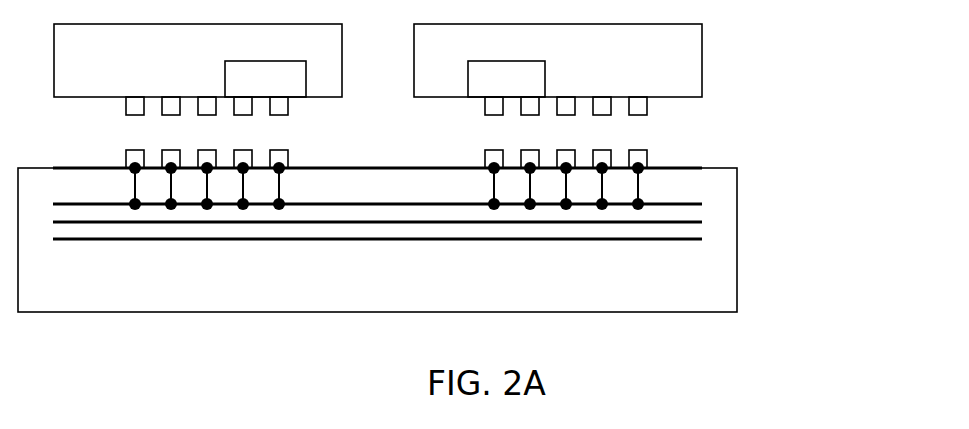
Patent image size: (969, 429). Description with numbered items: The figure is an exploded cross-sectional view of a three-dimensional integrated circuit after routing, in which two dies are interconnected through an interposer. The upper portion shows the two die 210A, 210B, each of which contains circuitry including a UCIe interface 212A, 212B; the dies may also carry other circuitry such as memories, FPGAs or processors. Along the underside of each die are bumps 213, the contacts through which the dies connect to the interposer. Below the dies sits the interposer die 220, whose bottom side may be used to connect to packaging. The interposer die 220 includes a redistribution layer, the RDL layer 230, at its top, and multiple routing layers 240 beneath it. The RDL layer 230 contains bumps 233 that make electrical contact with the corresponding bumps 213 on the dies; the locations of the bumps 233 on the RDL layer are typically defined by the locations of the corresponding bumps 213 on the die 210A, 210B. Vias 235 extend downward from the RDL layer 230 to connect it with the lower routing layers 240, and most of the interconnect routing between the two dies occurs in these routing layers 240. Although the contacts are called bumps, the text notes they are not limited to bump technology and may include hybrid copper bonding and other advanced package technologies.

The die 210A is at (198, 60).
The die 210B is at (558, 60).
The UCIe interface 212A is at (265, 79).
The UCIe interface 212B is at (506, 79).
The bumps 213 is at (648, 105).
The bumps 233 is at (648, 157).
The RDL layer 230 is at (688, 167).
The vias 235 is at (640, 193).
The routing layers 240 is at (743, 198).
The interposer die 220 is at (377, 240).